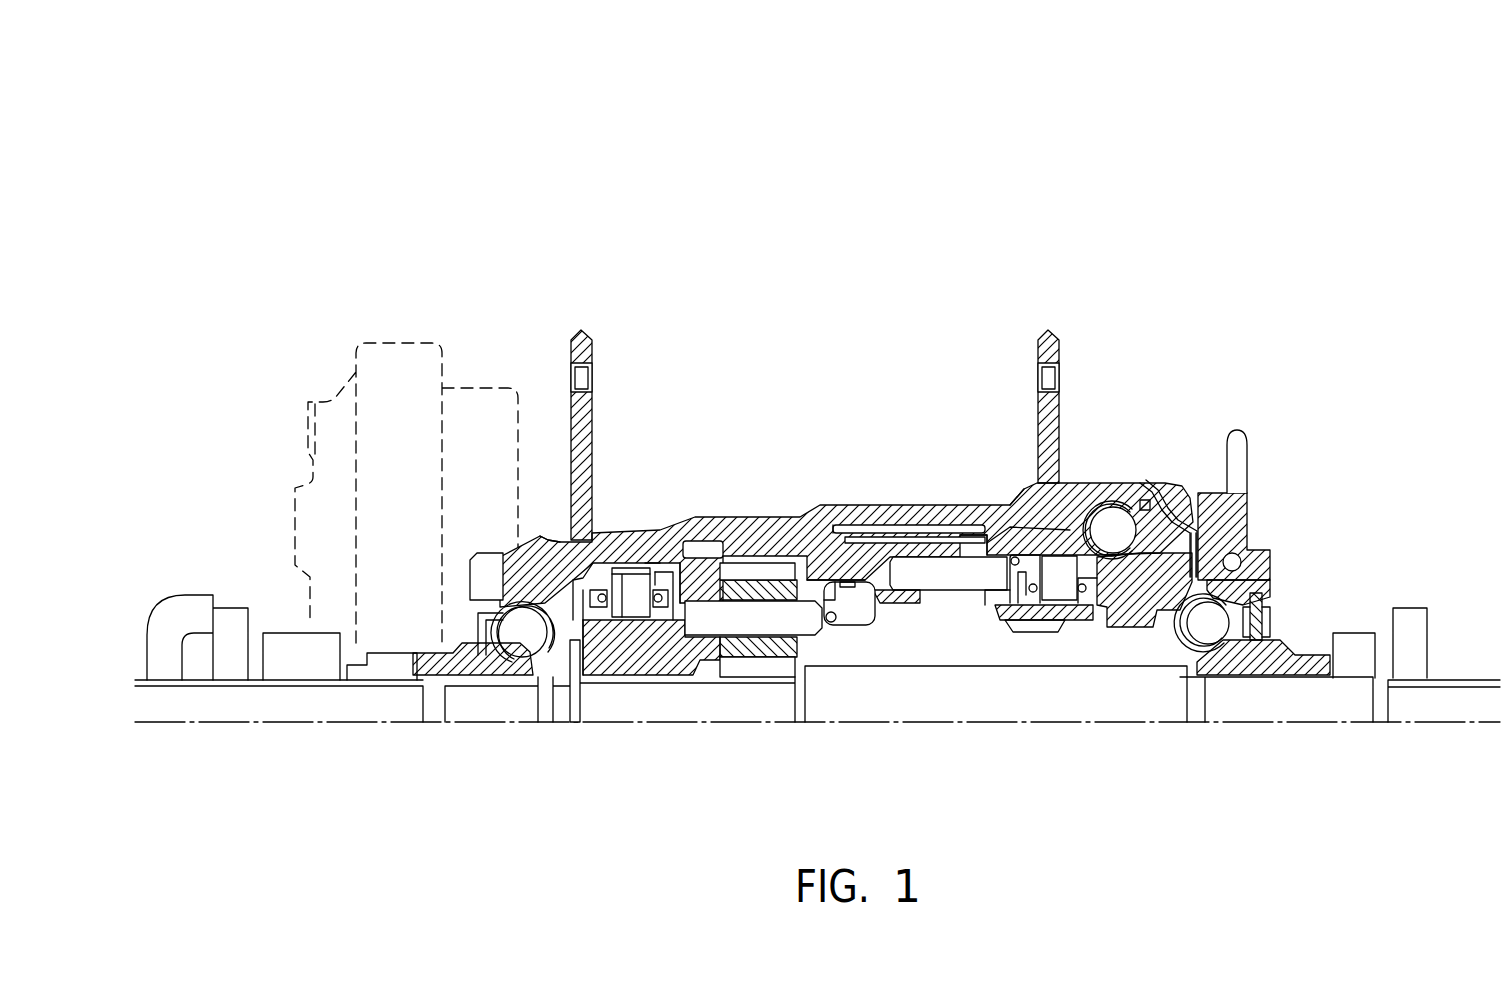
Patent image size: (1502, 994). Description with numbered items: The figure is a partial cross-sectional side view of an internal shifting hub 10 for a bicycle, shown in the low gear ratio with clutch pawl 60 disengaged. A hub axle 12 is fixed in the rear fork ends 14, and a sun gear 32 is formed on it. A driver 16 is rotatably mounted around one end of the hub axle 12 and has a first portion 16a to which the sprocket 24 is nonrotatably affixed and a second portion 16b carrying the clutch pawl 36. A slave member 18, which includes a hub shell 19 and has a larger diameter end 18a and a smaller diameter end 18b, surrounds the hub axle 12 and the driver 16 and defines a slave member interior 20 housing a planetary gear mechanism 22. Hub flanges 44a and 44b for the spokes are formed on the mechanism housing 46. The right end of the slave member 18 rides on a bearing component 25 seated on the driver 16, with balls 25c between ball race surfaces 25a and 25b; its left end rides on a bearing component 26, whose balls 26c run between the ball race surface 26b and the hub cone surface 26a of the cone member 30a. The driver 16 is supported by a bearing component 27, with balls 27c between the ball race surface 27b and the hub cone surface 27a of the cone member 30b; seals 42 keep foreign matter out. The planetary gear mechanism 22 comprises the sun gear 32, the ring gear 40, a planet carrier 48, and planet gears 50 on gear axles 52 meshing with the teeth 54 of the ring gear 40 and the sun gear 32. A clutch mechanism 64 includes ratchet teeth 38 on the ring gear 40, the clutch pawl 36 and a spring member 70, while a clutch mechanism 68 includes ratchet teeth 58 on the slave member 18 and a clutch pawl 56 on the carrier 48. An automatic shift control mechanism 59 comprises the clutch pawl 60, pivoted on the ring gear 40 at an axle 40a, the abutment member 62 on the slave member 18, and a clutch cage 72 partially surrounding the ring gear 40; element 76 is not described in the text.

The internal shifting hub 10 is at (1160, 318).
The hub axle 12 is at (1158, 710).
The rear fork ends 14 is at (232, 615).
The driver 16 is at (1205, 520).
The first portion of the driver 16a is at (1258, 565).
The second portion of the driver 16b is at (1027, 602).
The slave member 18 is at (795, 528).
The larger diameter end 18a is at (1080, 475).
The smaller diameter end 18b is at (612, 527).
The hub shell 19 is at (664, 548).
The slave member interior 20 is at (914, 610).
The planetary gear mechanism 22 is at (704, 561).
The sprocket 24 is at (1240, 455).
The bearing component 25 is at (1152, 560).
The ball race surface 25a is at (1138, 590).
The ball race surface 25b is at (1095, 520).
The balls 25c is at (1152, 545).
The bearing component 26 is at (560, 672).
The hub cone surface 26a is at (510, 668).
The ball race surface 26b is at (507, 563).
The balls 26c is at (603, 660).
The bearing component 27 is at (1237, 590).
The hub cone surface 27a is at (1218, 650).
The ball race surface 27b is at (1245, 605).
The balls 27c is at (1270, 625).
The cone member 30a is at (490, 668).
The cone member 30b is at (1277, 667).
The sun gear 32 is at (711, 665).
The clutch pawl 36 is at (993, 507).
The ratchet teeth 38 is at (1017, 483).
The ring gear 40 is at (890, 528).
The axle 40a is at (978, 598).
The seals 42 is at (1140, 505).
The hub flange 44a is at (585, 330).
The hub flange 44b is at (1050, 330).
The mechanism housing 46 is at (548, 462).
The planet carrier 48 is at (662, 662).
The planet gear 50 is at (808, 652).
The gear axle 52 is at (823, 617).
The teeth 54 is at (760, 522).
The clutch pawl 56 is at (626, 597).
The ratchet teeth 58 is at (553, 547).
The automatic shift control mechanism 59 is at (900, 665).
The clutch pawl 60 is at (950, 552).
The abutment member 62 is at (970, 532).
The clutch mechanism 64 is at (1008, 608).
The clutch mechanism 68 is at (663, 578).
The spring member 70 is at (655, 590).
The clutch cage 72 is at (917, 525).
The ring 76 is at (827, 532).